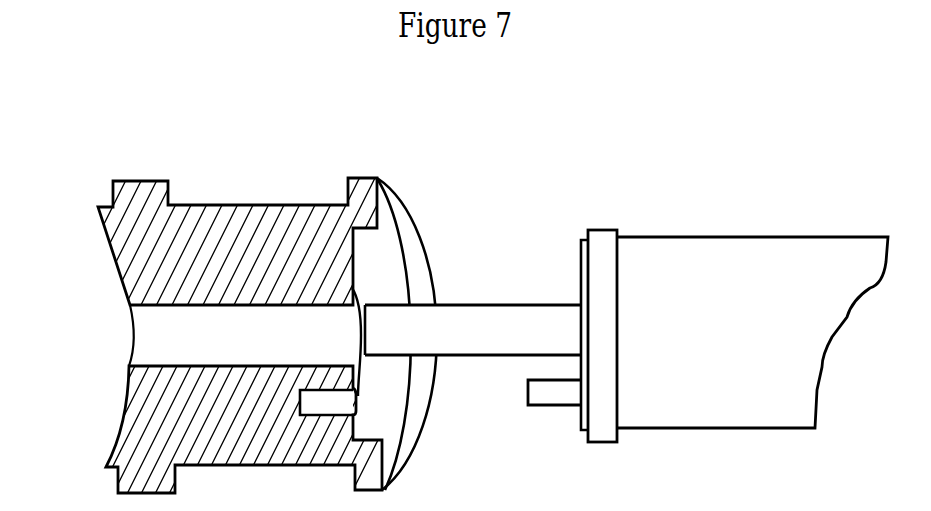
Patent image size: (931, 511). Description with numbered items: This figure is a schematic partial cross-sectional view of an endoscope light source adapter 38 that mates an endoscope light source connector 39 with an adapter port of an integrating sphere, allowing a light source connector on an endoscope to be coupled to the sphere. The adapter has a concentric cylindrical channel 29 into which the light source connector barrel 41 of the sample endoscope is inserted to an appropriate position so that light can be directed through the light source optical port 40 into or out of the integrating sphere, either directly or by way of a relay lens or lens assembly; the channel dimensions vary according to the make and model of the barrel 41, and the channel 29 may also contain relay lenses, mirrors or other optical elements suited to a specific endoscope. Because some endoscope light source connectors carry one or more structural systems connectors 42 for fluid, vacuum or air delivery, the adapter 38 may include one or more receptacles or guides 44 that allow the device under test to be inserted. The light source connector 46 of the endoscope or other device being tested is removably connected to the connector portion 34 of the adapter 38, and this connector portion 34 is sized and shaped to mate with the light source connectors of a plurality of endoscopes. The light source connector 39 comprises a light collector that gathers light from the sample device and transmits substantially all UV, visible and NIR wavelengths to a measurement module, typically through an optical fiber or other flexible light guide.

The concentric cylindrical channel 29 is at (148, 350).
The connector portion 34 is at (386, 198).
The endoscope light source adapter 38 is at (262, 190).
The endoscope light source connector 39 is at (765, 216).
The light source optical port 40 is at (365, 300).
The light source connector barrel 41 is at (478, 303).
The structural systems connector 42 is at (550, 408).
The receptacle or guide 44 is at (357, 397).
The light source connector 46 is at (588, 229).